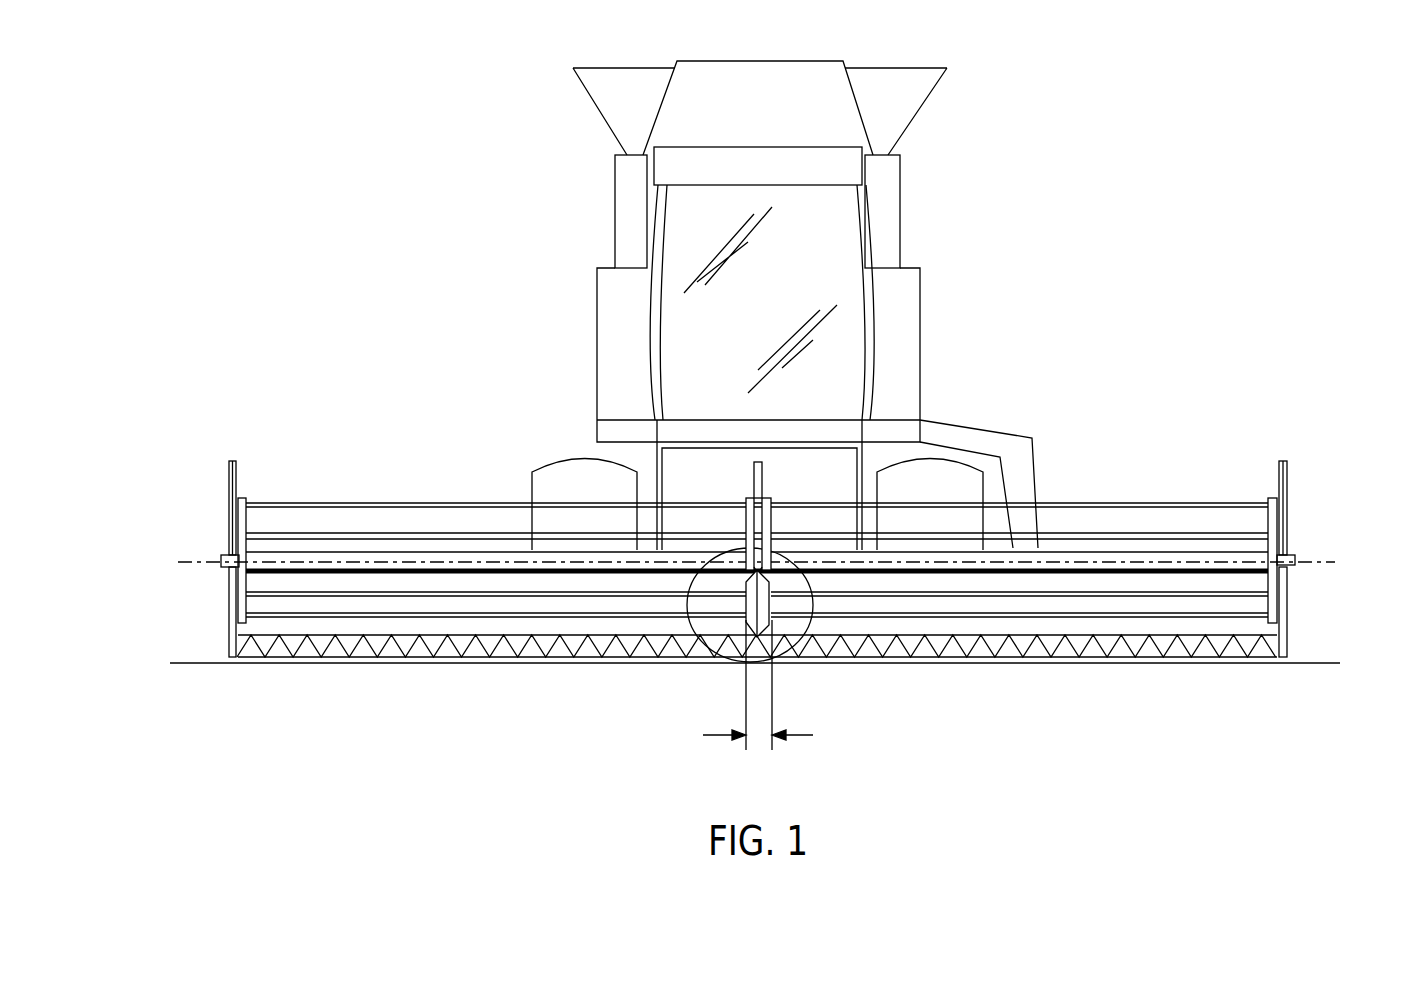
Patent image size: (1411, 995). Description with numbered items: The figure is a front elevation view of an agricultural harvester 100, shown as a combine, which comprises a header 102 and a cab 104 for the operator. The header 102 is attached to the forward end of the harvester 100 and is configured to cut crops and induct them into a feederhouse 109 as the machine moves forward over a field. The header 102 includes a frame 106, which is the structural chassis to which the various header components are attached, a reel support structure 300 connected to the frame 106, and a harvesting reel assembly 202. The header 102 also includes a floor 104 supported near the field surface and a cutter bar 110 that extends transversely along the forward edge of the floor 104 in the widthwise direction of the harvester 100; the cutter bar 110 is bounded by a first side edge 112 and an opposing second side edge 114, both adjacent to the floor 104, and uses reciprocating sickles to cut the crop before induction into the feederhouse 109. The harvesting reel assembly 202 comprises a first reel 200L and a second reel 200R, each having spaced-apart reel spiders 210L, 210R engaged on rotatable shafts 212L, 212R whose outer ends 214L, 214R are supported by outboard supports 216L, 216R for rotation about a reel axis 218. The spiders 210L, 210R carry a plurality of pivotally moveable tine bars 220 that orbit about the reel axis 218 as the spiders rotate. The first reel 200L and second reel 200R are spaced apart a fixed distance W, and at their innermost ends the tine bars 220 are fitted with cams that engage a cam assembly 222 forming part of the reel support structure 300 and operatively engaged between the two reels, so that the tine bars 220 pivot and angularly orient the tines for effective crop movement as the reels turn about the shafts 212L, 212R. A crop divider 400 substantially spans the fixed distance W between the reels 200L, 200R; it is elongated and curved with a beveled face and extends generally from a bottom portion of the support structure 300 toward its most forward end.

The agricultural harvester 100 is at (988, 183).
The header 102 is at (326, 490).
The cab / floor 104 is at (605, 212).
The frame 106 is at (1288, 470).
The feederhouse 109 is at (687, 473).
The cutter bar 110 is at (910, 657).
The first side edge 112 is at (225, 627).
The second side edge 114 is at (1290, 638).
The first reel 200L is at (438, 476).
The second reel 200R is at (1187, 479).
The harvesting reel assembly 202 is at (1238, 415).
The reel spider 210L is at (229, 492).
The reel spider 210R is at (1288, 500).
The rotatable shaft 212L is at (478, 550).
The rotatable shaft 212R is at (1225, 547).
The outer end 214L is at (210, 578).
The outer end 214R is at (1308, 596).
The outboard support 216L is at (221, 557).
The outboard support 216R is at (1290, 567).
The reel axis 218 is at (1320, 560).
The tine bar 220 is at (412, 532).
The cam assembly 222 is at (688, 658).
The reel support structure 300 is at (779, 482).
The crop divider 400 is at (741, 630).